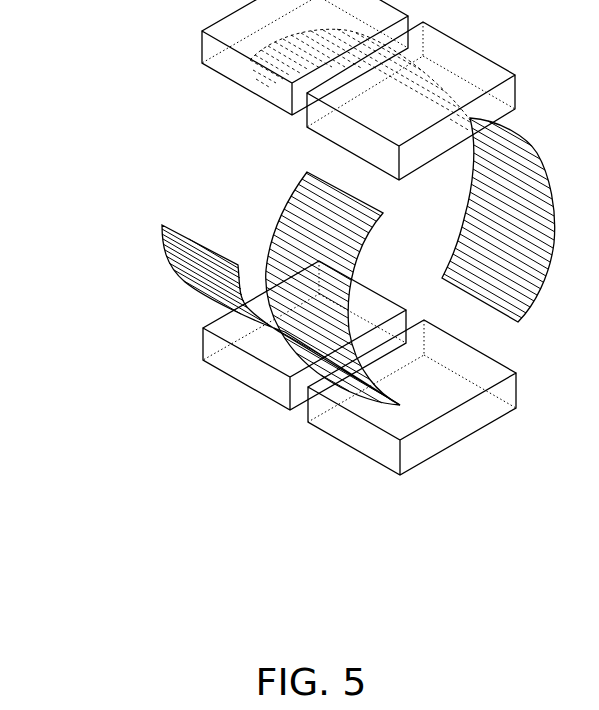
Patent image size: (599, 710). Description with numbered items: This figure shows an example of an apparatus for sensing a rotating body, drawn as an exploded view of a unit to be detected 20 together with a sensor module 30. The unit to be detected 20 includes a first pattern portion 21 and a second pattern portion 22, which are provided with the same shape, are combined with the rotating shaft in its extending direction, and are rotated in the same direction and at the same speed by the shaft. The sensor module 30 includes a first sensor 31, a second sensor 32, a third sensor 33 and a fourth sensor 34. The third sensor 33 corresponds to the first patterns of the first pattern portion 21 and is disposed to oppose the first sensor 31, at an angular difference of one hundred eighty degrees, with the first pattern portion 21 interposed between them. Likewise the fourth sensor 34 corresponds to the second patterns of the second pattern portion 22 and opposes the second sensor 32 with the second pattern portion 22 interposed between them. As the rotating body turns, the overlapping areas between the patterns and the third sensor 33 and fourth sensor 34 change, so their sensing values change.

The unit to be detected 20 is at (76, 149).
The first pattern portion 21 is at (177, 248).
The second pattern portion 22 is at (293, 188).
The sensor module 30 is at (548, 583).
The first sensor 31 is at (273, 397).
The second sensor 32 is at (383, 453).
The third sensor 33 is at (277, 103).
The fourth sensor 34 is at (420, 153).